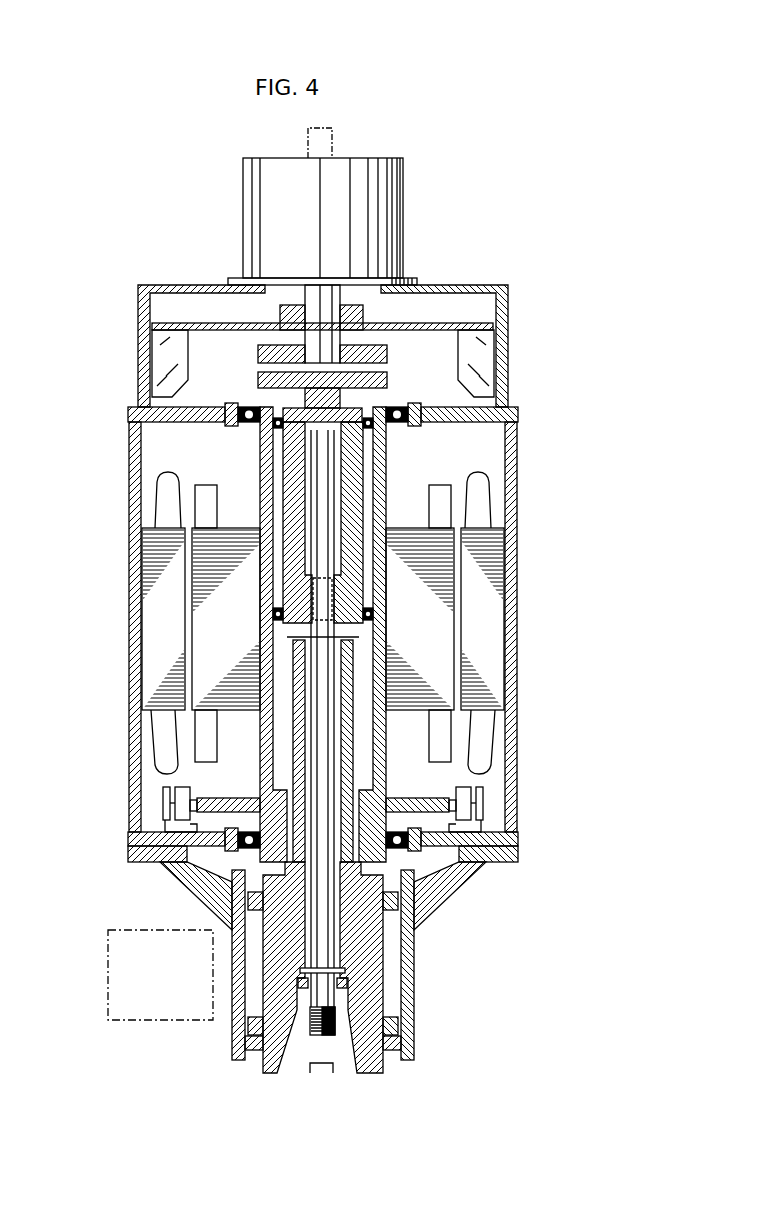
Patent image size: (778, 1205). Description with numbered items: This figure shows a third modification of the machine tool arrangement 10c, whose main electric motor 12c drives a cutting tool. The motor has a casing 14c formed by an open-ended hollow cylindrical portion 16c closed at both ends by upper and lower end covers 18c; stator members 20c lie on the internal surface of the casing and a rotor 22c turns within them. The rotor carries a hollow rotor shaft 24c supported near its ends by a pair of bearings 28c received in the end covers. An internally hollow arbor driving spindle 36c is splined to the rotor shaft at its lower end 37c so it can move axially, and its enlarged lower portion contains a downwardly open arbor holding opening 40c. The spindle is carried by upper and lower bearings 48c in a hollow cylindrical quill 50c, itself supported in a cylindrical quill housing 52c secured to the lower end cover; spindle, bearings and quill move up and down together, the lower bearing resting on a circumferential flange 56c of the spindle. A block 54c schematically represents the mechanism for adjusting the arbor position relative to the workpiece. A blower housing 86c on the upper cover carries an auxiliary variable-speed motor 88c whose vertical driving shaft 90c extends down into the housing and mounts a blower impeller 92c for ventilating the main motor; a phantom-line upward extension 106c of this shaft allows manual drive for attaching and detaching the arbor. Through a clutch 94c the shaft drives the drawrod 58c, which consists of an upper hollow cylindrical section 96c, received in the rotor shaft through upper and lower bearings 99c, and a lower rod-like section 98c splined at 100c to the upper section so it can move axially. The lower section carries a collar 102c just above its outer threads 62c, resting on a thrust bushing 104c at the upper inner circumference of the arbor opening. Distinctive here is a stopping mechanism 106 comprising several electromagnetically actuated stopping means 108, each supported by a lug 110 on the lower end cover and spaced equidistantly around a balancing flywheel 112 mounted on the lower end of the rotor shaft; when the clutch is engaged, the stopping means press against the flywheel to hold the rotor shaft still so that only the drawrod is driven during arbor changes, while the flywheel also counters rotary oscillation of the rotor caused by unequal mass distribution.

The machine tool arrangement 10c is at (323, 627).
The main electric motor 12c is at (326, 623).
The casing 14c is at (517, 480).
The hollow cylindrical portion 16c is at (133, 645).
The end cover 18c is at (145, 415).
The stator members 20c is at (146, 556).
The rotor 22c is at (205, 592).
The rotor shaft 24c is at (262, 722).
The bearings 28c is at (416, 428).
The arbor driving spindle 36c is at (262, 928).
The lower end of rotor shaft 37c is at (363, 810).
The arbor holding opening 40c is at (300, 1068).
The bearings 48c is at (400, 900).
The quill 50c is at (231, 965).
The quill housing 52c is at (230, 1022).
The position adjusting mechanism 54c is at (108, 992).
The circumferential flange 56c is at (403, 1062).
The drawrod 58c is at (298, 690).
The outer threads 62c is at (345, 1065).
The blower housing 86c is at (165, 286).
The auxiliary variable-speed motor 88c is at (403, 192).
The driving shaft 90c is at (316, 298).
The blower impeller 92c is at (159, 356).
The clutch 94c is at (386, 378).
The upper hollow cylindrical section 96c is at (358, 462).
The lower rod-like section 98c is at (330, 660).
The bearings 99c is at (274, 426).
The spline 100c is at (334, 590).
The collar 102c is at (345, 970).
The thrust bushing 104c is at (347, 983).
The upward extension 106c is at (330, 134).
The stopping mechanism 106 is at (162, 803).
The electromagnetically actuated stopping means 108 is at (175, 826).
The lug 110 is at (170, 852).
The balancing flywheel 112 is at (200, 795).